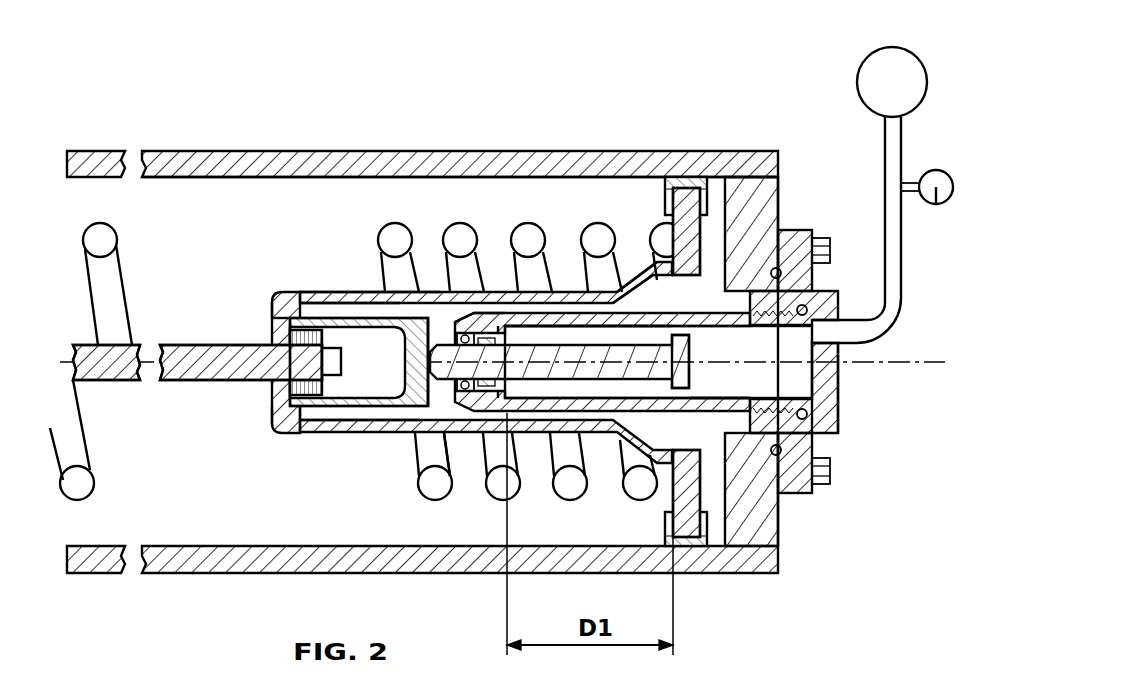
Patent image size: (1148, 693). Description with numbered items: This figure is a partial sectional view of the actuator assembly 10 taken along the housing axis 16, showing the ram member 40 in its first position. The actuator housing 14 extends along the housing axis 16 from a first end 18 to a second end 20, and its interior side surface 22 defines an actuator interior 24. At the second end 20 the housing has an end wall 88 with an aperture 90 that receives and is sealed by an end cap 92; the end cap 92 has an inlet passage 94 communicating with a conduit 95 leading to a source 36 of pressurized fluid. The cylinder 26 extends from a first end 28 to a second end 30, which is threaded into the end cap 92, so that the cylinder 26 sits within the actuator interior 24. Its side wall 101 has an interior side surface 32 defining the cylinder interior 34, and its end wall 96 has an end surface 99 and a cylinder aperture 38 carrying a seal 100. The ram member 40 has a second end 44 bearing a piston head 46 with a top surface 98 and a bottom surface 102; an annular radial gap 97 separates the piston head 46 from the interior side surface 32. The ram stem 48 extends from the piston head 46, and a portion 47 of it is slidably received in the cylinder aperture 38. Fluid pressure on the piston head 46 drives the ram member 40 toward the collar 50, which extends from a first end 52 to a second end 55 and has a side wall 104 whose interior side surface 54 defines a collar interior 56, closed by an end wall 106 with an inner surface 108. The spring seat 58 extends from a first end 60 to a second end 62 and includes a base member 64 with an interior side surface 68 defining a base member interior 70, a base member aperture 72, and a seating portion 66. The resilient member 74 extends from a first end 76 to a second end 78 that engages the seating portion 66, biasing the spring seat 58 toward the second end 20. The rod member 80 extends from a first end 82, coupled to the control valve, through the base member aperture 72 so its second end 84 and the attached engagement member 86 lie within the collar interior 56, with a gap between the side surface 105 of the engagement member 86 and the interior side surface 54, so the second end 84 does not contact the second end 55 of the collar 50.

The actuator assembly 10 is at (637, 38).
The actuator housing 14 is at (422, 146).
The housing axis 16 is at (507, 339).
The first end 18 is at (419, 595).
The second end 20 is at (782, 410).
The interior side surface 22 is at (460, 197).
The actuator interior 24 is at (507, 194).
The cylinder 26 is at (829, 361).
The first end 28 is at (399, 401).
The second end 30 is at (849, 417).
The interior side surface 32 is at (775, 362).
The cylinder interior 34 is at (658, 362).
The source of pressurized fluid 36 is at (911, 116).
The cylinder aperture 38 is at (474, 425).
The ram member 40 is at (559, 306).
The second end 44 is at (602, 343).
The piston head 46 is at (714, 422).
The portion of the ram stem 47 is at (492, 436).
The ram stem 48 is at (486, 253).
The collar 50 is at (287, 447).
The first end 52 is at (268, 334).
The interior side surface 54 is at (347, 362).
The second end 55 is at (391, 271).
The collar interior 56 is at (359, 362).
The spring seat 58 is at (486, 475).
The first end 60 is at (239, 287).
The second end 62 is at (778, 489).
The base member 64 is at (532, 374).
The seating portion 66 is at (661, 528).
The interior side surface 68 is at (497, 481).
The base member interior 70 is at (350, 263).
The base member aperture 72 is at (245, 398).
The resilient member 74 is at (231, 358).
The first end 76 is at (121, 228).
The second end 78 is at (634, 391).
The rod member 80 is at (207, 344).
The first end 82 is at (87, 295).
The second end 84 is at (323, 257).
The engagement member 86 is at (248, 301).
The end wall 88 is at (778, 234).
The aperture 90 is at (823, 361).
The end cap 92 is at (881, 388).
The inlet passage 94 is at (883, 359).
The conduit 95 is at (880, 230).
The end wall 96 is at (437, 258).
The annular radial gap 97 is at (588, 308).
The top surface 98 is at (707, 358).
The end surface 99 is at (453, 438).
The seal 100 is at (469, 247).
The side wall 101 is at (637, 251).
The bottom surface 102 is at (617, 236).
The side wall 104 is at (248, 440).
The side surface 105 is at (245, 374).
The end wall 106 is at (393, 431).
The inner surface 108 is at (358, 463).